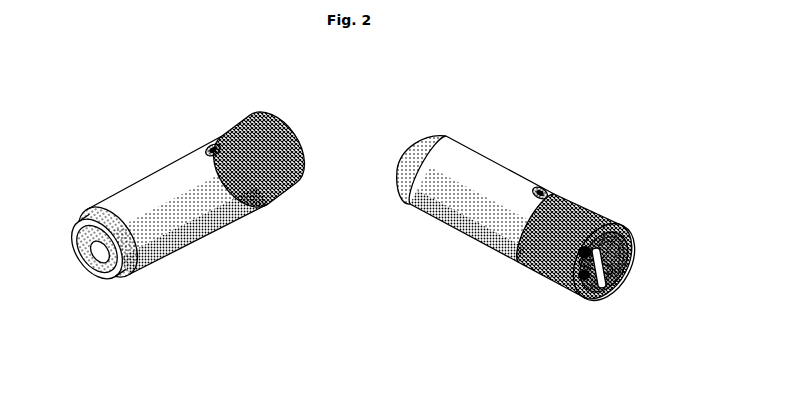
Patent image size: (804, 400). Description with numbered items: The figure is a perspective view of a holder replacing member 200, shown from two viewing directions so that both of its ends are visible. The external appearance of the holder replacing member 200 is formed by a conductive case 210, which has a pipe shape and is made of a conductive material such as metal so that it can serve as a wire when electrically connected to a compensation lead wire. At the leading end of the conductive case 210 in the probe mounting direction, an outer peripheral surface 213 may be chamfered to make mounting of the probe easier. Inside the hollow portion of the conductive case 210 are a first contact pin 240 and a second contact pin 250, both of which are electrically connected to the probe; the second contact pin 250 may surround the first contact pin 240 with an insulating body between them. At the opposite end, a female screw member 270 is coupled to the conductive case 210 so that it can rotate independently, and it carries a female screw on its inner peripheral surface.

The holder replacing member 200 is at (157, 152).
The conductive case 210 is at (193, 237).
The outer peripheral surface 213 is at (425, 145).
The first contact pin 240 is at (100, 257).
The second contact pin 250 is at (597, 280).
The female screw member 270 is at (600, 208).